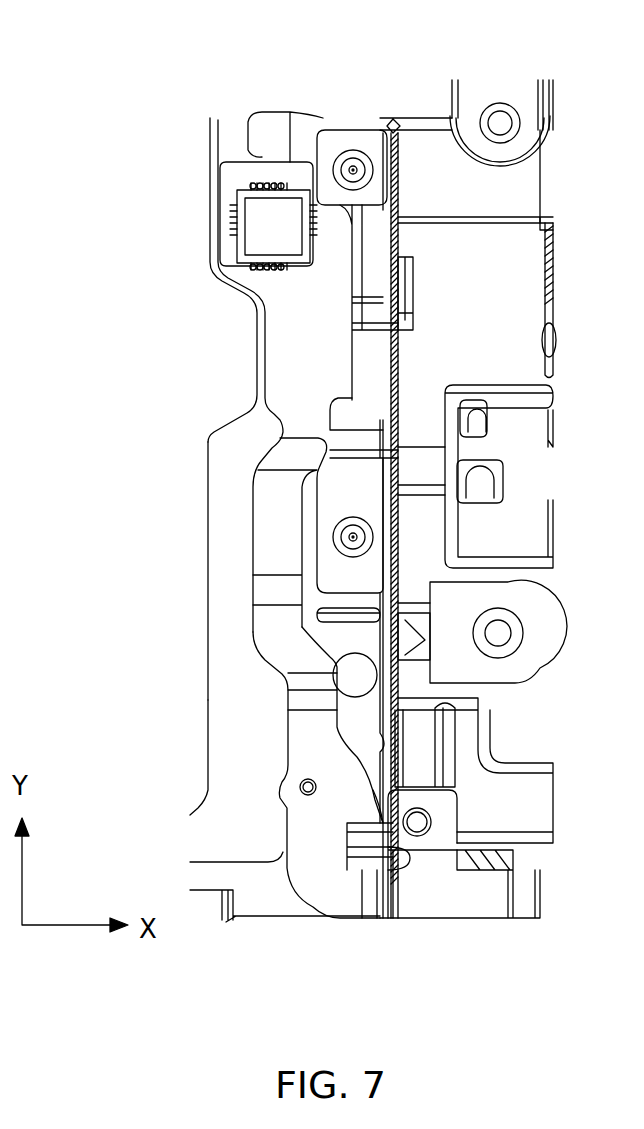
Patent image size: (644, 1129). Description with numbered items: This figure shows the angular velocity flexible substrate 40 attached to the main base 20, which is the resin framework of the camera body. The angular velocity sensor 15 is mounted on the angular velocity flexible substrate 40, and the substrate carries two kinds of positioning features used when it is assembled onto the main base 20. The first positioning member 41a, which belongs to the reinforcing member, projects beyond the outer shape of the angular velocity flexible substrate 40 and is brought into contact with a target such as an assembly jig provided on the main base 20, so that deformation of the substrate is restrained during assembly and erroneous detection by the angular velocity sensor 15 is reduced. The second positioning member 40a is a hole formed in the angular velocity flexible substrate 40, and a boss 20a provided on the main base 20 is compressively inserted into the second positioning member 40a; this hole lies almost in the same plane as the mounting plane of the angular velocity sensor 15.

The angular velocity sensor 15 is at (253, 222).
The main base 20 is at (257, 673).
The angular velocity flexible substrate 40 is at (298, 312).
The second positioning member 40a is at (258, 806).
The boss 20a is at (176, 757).
The first positioning member 41a is at (323, 118).